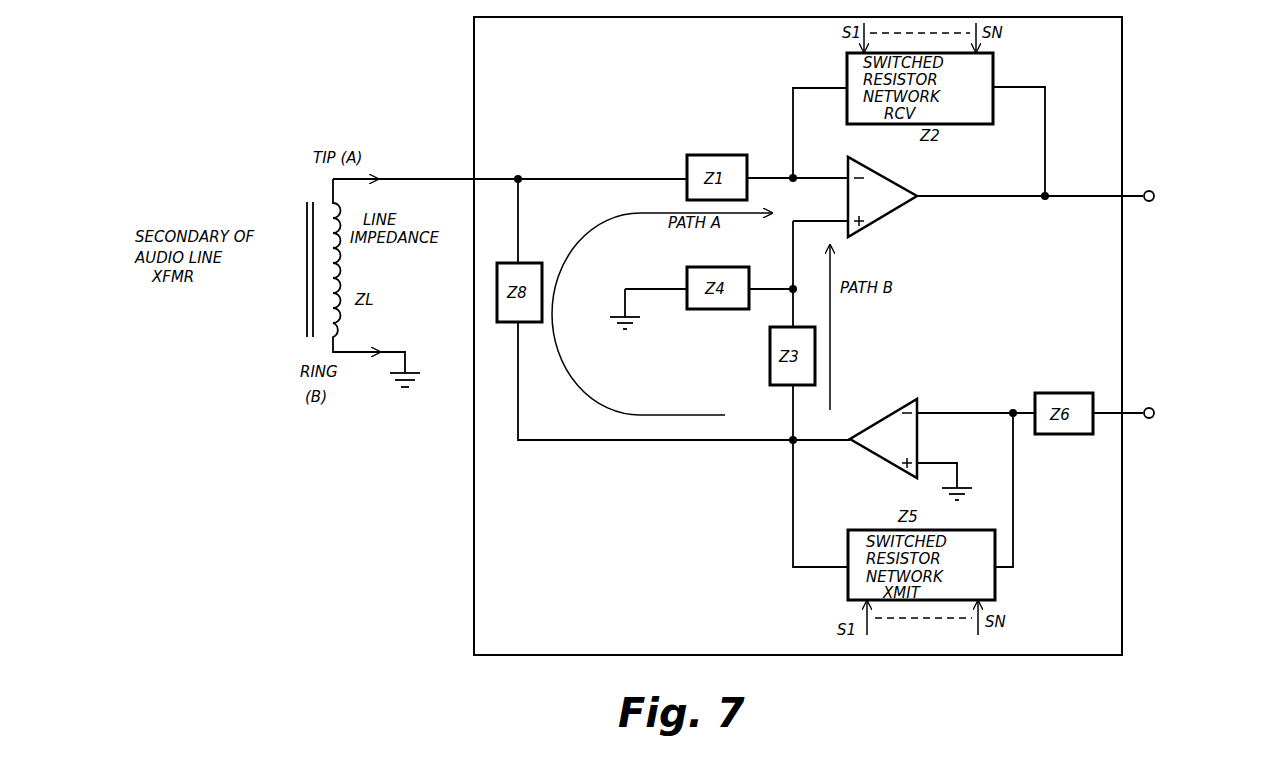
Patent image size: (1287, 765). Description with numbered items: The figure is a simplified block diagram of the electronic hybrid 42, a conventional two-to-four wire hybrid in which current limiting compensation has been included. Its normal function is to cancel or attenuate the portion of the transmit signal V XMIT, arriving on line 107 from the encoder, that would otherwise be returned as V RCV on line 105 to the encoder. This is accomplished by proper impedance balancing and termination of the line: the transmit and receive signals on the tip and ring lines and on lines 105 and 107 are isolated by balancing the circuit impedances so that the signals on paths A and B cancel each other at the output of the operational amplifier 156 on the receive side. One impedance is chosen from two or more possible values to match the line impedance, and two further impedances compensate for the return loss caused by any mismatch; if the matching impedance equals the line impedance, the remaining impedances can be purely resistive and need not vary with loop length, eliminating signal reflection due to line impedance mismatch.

The electronic hybrid 42 is at (474, 537).
The V RCV line 105 is at (1133, 190).
The V XMIT line 107 is at (1133, 410).
The operational amplifier 156 is at (886, 213).